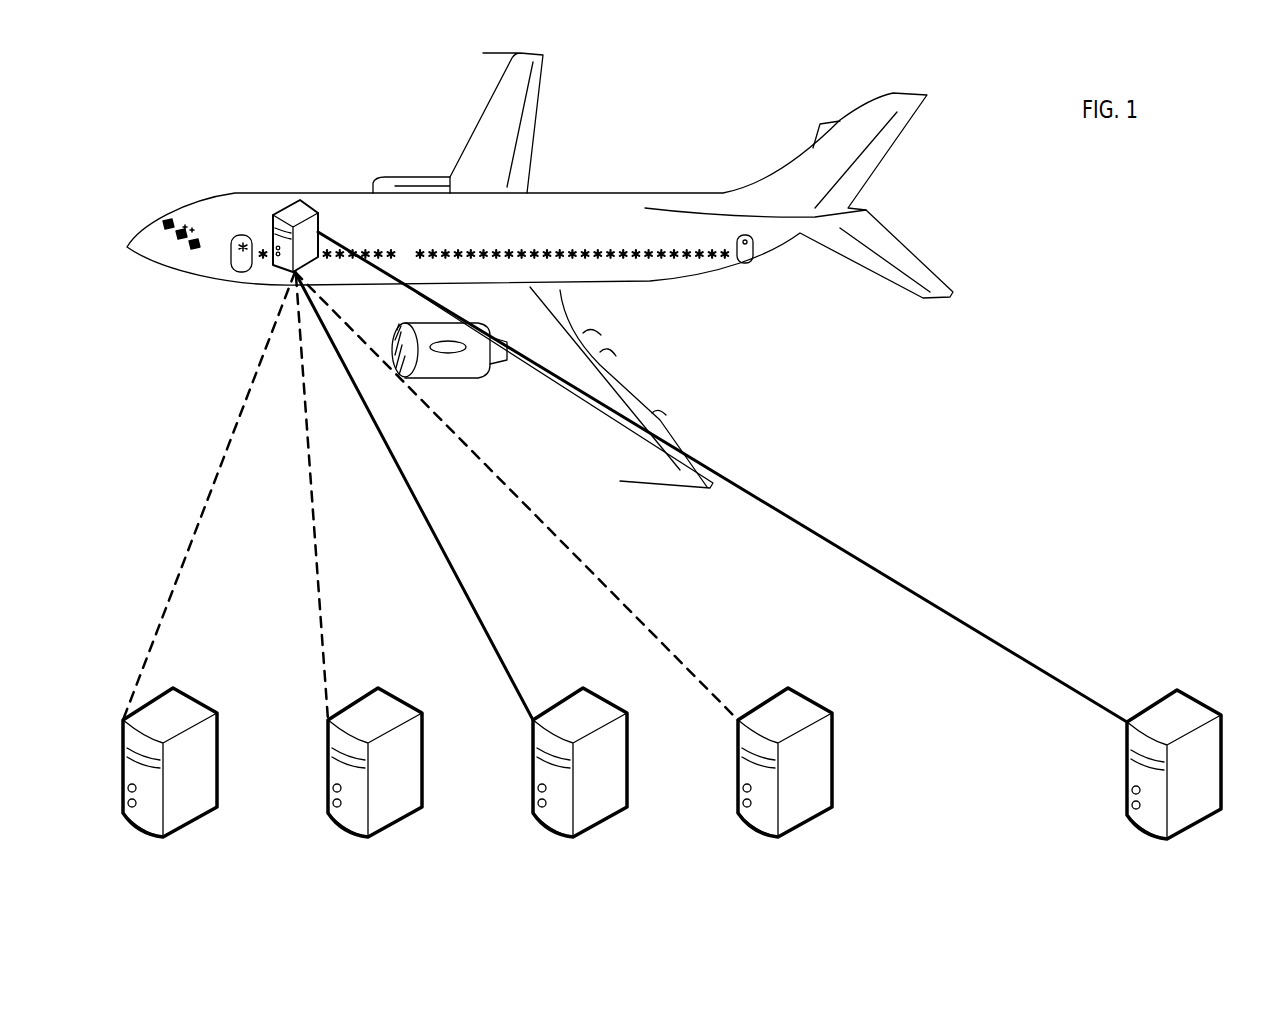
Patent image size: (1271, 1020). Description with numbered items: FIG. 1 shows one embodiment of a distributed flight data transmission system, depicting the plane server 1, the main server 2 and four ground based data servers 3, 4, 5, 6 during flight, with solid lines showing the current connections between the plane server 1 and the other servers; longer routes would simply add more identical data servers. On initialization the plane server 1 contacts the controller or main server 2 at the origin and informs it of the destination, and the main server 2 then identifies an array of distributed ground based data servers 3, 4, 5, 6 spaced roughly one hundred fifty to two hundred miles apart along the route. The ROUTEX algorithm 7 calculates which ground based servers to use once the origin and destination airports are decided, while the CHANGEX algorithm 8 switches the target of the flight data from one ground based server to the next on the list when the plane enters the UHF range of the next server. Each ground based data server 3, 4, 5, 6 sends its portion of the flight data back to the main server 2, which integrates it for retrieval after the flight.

The plane server 1 is at (353, 236).
The main server 2 is at (1167, 773).
The ground based data server 3 is at (777, 773).
The ground based data server 4 is at (575, 773).
The ground based data server 5 is at (367, 773).
The ground based data server 6 is at (162, 773).
The ROUTEX algorithm 7 is at (298, 172).
The CHANGEX algorithm 8 is at (194, 304).